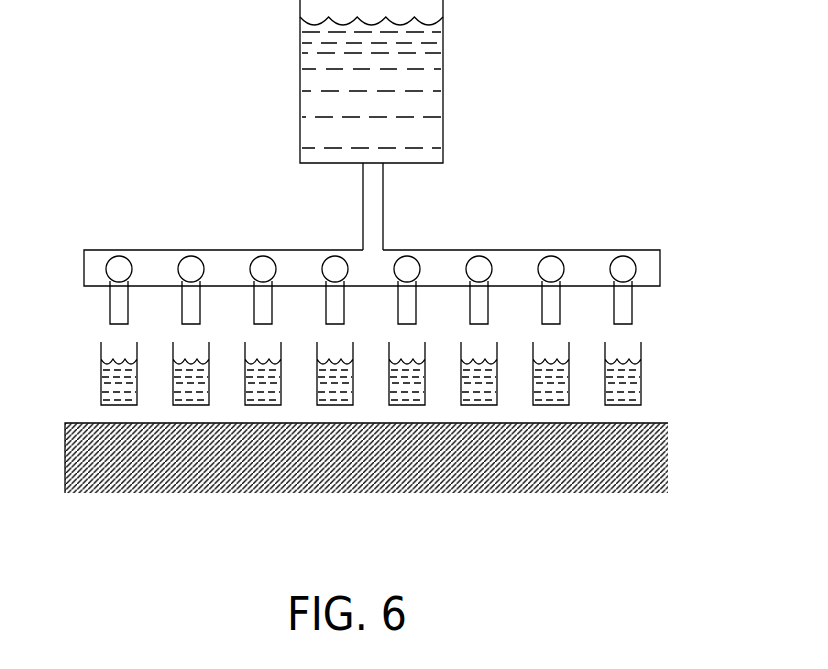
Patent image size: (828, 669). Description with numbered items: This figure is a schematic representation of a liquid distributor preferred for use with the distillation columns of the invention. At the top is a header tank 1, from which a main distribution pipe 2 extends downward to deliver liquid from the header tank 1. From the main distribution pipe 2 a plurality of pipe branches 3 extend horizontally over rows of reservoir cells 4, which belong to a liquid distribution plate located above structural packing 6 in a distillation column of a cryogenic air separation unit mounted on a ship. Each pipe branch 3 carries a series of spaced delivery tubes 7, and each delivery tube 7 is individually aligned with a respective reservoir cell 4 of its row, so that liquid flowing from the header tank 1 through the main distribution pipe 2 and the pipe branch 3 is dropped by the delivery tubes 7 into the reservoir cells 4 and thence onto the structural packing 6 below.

The header tank 1 is at (300, 80).
The main distribution pipe 2 is at (363, 210).
The pipe branch 3 is at (648, 269).
The reservoir cell 4 is at (654, 388).
The structural packing 6 is at (677, 453).
The delivery tube 7 is at (109, 301).